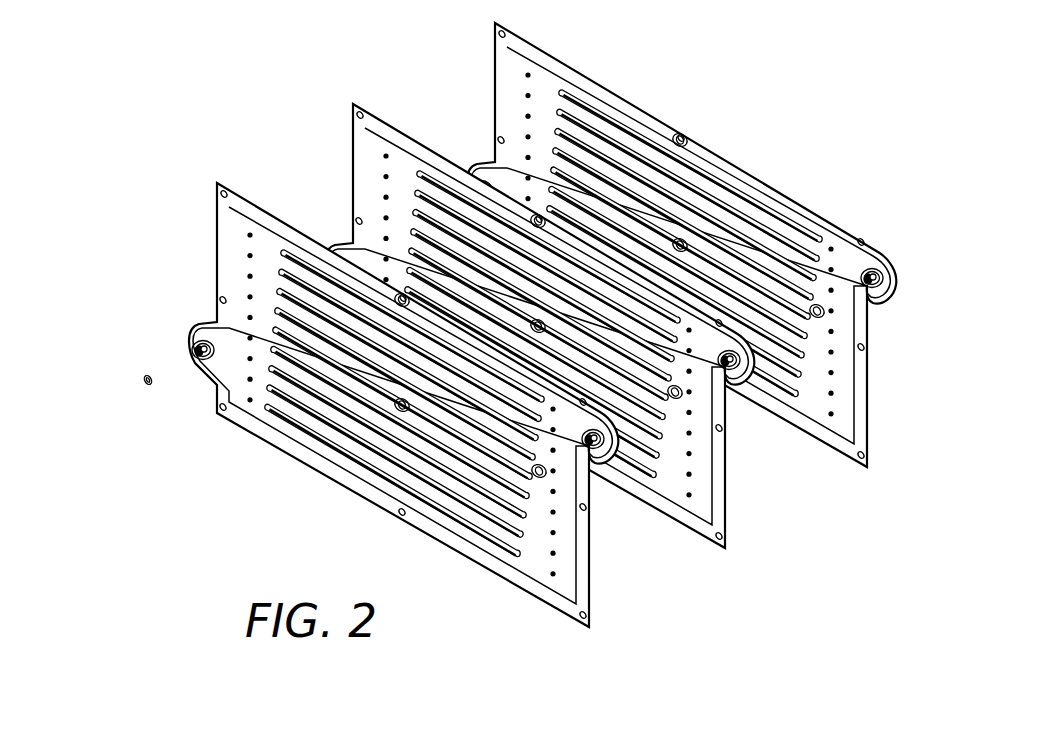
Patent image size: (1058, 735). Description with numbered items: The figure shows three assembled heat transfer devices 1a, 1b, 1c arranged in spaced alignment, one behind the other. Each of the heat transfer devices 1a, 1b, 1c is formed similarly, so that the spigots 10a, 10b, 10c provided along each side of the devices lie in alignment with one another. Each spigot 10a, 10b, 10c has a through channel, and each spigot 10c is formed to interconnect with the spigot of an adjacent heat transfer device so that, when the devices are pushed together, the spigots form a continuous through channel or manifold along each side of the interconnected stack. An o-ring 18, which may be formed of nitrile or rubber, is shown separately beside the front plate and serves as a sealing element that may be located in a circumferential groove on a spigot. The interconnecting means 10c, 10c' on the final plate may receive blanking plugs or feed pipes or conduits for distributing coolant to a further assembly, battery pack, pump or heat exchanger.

The heat transfer device 1a is at (764, 165).
The heat transfer device 1b is at (409, 126).
The heat transfer device 1c is at (276, 208).
The spigot 10a is at (874, 298).
The spigot 10b is at (729, 378).
The spigot 10c is at (608, 483).
The interconnecting means 10c' is at (164, 344).
The o-ring 18 is at (144, 380).